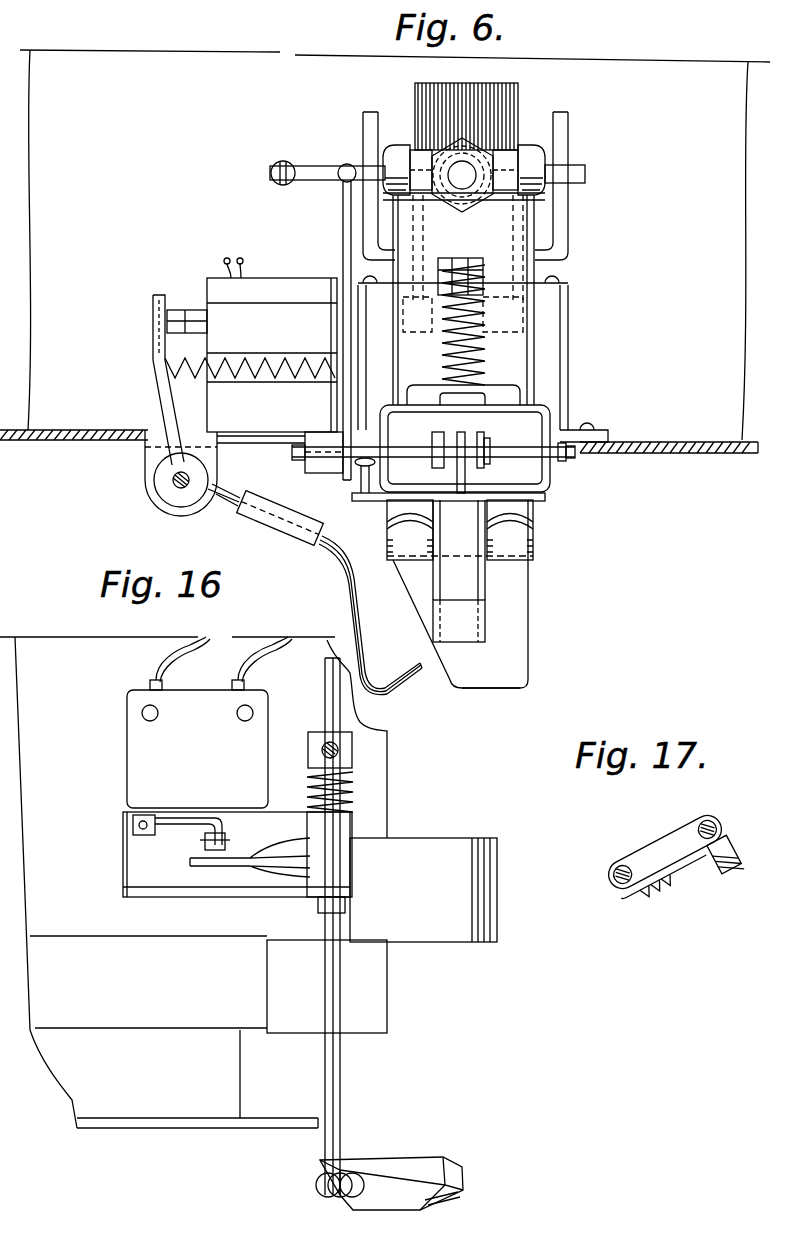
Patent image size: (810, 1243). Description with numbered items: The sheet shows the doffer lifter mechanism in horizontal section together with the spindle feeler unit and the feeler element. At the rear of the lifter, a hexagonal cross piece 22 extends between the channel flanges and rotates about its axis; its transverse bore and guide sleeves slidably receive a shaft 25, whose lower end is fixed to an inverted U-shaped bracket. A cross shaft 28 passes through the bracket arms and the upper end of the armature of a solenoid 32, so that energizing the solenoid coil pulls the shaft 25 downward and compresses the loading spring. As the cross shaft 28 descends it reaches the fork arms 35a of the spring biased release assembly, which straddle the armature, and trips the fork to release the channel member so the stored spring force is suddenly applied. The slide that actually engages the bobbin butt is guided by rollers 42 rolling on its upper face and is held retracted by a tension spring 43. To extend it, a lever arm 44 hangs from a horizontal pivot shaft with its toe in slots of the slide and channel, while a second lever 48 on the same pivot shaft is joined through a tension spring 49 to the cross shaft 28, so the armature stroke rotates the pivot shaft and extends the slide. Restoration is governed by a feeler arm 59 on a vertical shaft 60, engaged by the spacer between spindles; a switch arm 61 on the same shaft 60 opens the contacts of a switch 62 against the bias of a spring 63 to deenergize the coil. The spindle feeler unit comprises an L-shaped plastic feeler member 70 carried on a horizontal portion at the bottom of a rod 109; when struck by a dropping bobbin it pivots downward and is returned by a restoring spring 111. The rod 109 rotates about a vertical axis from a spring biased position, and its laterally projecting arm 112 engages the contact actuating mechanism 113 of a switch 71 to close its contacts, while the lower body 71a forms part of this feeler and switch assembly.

In FIG. 6, the cross piece 22 is at (415, 150).
In FIG. 6, the shaft 25 is at (466, 177).
In FIG. 6, the cross shaft 28 is at (300, 164).
In FIG. 6, the solenoid 32 is at (415, 93).
In FIG. 6, the fork arms 35a is at (568, 127).
In FIG. 6, the rollers 42 is at (492, 505).
In FIG. 6, the tension spring 43 is at (462, 363).
In FIG. 6, the lever arm 44 is at (548, 492).
In FIG. 6, the lever 48 is at (342, 243).
In FIG. 6, the tension spring 49 is at (348, 164).
In FIG. 6, the feeler arm 59 is at (388, 700).
In FIG. 6, the shaft 60 is at (177, 484).
In FIG. 6, the switch arm 61 is at (158, 402).
In FIG. 6, the switch 62 is at (285, 340).
In FIG. 6, the spring 63 is at (258, 380).
In FIG. 16, the feeler member 70 is at (400, 1170).
In FIG. 17, the feeler member 70 is at (672, 838).
In FIG. 6, the switch 71 is at (528, 590).
In FIG. 16, the switch 71 is at (212, 763).
In FIG. 6, the housing bottom 71a is at (485, 690).
In FIG. 16, the rod 109 is at (342, 1060).
In FIG. 16, the restoring spring 111 is at (316, 1199).
In FIG. 16, the laterally projecting arm 112 is at (226, 866).
In FIG. 16, the contact actuating mechanism 113 is at (228, 840).